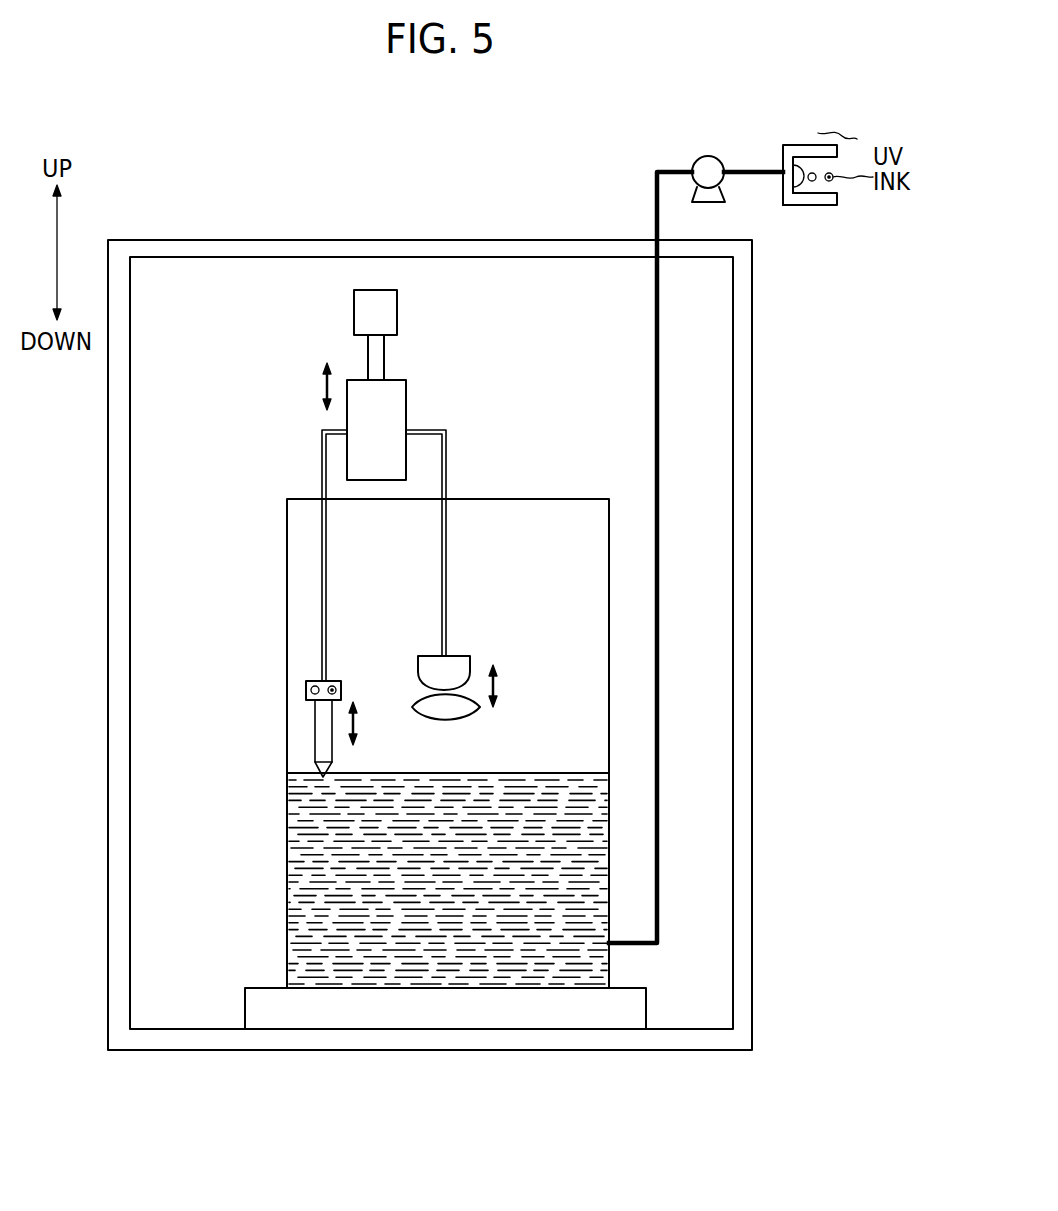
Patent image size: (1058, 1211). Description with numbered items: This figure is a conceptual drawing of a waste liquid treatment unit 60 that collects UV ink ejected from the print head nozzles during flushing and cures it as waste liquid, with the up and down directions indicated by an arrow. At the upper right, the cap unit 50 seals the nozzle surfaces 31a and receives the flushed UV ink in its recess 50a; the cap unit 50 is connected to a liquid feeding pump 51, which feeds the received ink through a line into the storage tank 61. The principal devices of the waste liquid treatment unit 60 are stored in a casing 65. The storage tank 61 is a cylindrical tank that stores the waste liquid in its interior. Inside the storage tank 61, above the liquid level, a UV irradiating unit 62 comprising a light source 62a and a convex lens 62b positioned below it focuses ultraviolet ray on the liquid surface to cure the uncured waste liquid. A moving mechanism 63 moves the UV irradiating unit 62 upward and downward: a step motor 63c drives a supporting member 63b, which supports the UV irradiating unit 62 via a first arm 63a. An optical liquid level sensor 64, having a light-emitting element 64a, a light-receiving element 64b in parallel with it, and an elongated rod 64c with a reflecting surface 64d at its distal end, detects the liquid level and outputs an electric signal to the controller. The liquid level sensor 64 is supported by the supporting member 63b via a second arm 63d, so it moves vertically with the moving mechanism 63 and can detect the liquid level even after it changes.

The nozzle surface 31a is at (817, 205).
The cap unit 50 is at (798, 197).
The recess 50a is at (812, 190).
The liquid feeding pump 51 is at (709, 157).
The waste liquid treatment unit 60 is at (763, 412).
The storage tank 61 is at (570, 498).
The UV irradiating unit 62 is at (457, 677).
The light source 62a is at (432, 661).
The lens 62b is at (457, 710).
The moving mechanism 63 is at (382, 485).
The first arm 63a is at (447, 472).
The supporting member 63b is at (400, 406).
The step motor 63c is at (390, 313).
The second arm 63d is at (322, 471).
The liquid level sensor 64 is at (325, 714).
The light-emitting element 64a is at (306, 690).
The light-receiving element 64b is at (341, 690).
The rod 64c is at (327, 755).
The reflecting surface 64d is at (323, 777).
The casing 65 is at (752, 480).